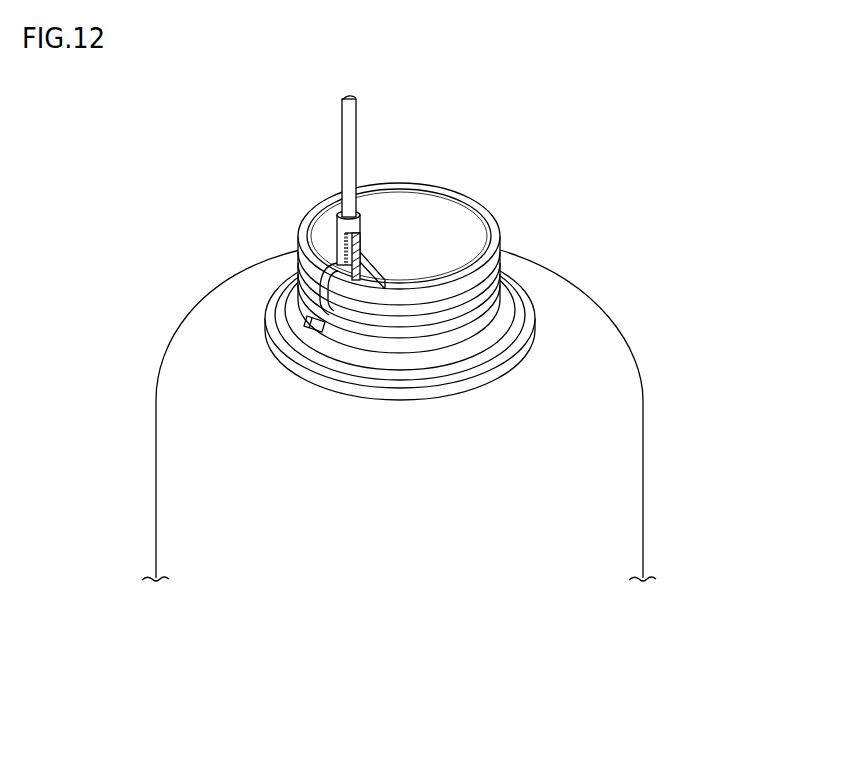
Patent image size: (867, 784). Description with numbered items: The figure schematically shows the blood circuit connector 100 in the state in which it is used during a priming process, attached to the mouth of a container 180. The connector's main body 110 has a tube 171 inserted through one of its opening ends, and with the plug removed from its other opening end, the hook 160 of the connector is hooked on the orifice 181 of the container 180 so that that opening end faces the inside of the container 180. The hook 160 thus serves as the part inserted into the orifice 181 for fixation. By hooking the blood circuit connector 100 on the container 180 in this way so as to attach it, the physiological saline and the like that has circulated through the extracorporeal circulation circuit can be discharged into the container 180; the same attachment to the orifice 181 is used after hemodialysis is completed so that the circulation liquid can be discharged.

The blood circuit connector 100 is at (327, 238).
The main body 110 is at (361, 228).
The hook 160 is at (316, 302).
The tube 171 is at (356, 118).
The container 180 is at (644, 518).
The orifice 181 is at (465, 198).